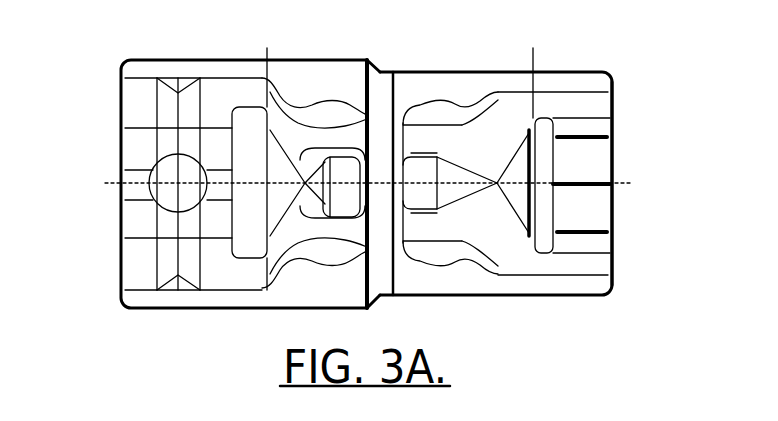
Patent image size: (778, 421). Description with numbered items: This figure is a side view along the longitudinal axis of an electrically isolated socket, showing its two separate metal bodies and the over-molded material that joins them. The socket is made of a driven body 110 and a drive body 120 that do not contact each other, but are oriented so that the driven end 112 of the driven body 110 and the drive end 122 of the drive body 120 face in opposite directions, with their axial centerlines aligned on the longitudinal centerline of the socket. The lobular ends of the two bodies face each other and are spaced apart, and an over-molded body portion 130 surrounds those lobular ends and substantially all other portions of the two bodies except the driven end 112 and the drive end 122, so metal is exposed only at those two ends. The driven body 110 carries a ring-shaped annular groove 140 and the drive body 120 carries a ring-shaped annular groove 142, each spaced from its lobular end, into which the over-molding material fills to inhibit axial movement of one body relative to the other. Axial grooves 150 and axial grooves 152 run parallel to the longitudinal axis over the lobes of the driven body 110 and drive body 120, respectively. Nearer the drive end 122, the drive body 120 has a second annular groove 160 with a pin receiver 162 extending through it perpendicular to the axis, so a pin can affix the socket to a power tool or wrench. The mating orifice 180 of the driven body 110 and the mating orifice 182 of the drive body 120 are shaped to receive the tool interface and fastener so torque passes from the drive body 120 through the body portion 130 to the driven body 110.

The driven body 110 is at (545, 278).
The driven end 112 is at (612, 262).
The drive body 120 is at (252, 296).
The drive end 122 is at (120, 272).
The body portion 130 is at (334, 303).
The annular groove 140 is at (471, 99).
The annular groove 142 is at (296, 88).
The axial grooves 150 is at (432, 111).
The axial grooves 152 is at (334, 111).
The second annular groove 160 is at (177, 84).
The pin receiver 162 is at (171, 214).
The mating orifice 180 is at (592, 162).
The mating orifice 182 is at (131, 154).